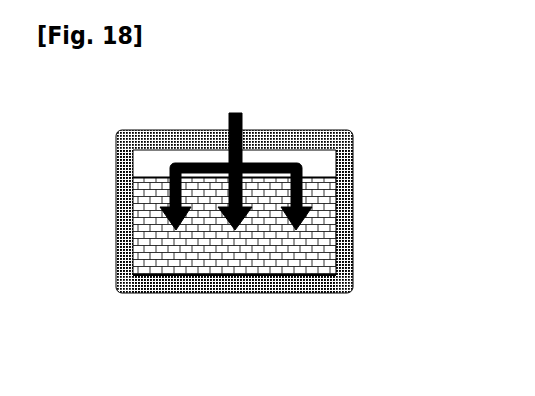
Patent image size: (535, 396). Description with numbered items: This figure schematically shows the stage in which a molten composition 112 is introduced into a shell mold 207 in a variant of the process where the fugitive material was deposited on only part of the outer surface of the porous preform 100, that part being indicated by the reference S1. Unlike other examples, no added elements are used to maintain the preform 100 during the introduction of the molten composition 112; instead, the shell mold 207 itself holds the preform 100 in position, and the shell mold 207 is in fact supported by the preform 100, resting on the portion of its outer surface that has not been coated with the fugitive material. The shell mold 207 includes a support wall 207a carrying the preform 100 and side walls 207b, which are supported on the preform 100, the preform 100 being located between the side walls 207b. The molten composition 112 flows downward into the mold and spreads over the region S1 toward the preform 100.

The molten composition 112 is at (242, 120).
The part of the outer surface S1 is at (320, 177).
The side walls 207b is at (128, 192).
The support wall 207a is at (277, 291).
The porous preform 100 is at (140, 257).
The shell mold 207 is at (136, 296).